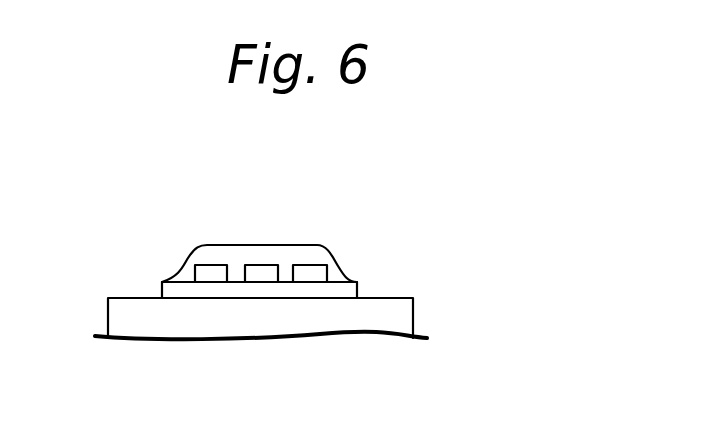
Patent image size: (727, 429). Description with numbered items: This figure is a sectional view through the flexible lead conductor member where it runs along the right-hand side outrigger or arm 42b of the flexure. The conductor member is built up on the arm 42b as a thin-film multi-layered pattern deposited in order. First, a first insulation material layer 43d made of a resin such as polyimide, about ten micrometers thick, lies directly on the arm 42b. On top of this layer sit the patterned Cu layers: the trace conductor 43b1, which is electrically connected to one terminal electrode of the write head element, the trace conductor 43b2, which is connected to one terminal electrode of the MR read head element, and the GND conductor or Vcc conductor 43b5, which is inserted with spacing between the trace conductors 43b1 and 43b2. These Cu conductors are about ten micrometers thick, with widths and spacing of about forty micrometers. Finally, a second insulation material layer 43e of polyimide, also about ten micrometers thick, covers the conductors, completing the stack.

The outrigger or arm 42b is at (373, 320).
The first insulation material layer 43d is at (352, 293).
The second insulation material layer 43e is at (323, 254).
The trace conductor 43b1 is at (307, 270).
The trace conductor 43b2 is at (205, 270).
The GND conductor or Vcc conductor 43b5 is at (260, 270).